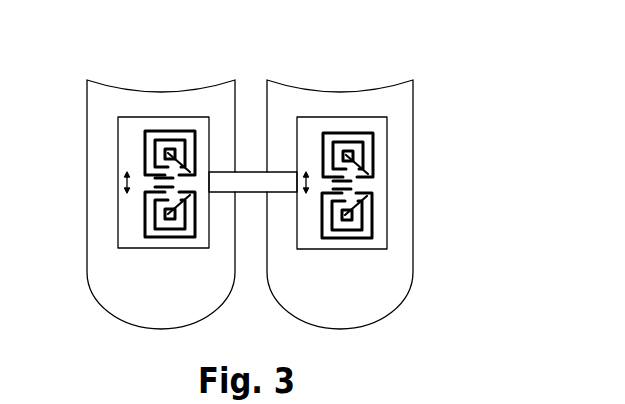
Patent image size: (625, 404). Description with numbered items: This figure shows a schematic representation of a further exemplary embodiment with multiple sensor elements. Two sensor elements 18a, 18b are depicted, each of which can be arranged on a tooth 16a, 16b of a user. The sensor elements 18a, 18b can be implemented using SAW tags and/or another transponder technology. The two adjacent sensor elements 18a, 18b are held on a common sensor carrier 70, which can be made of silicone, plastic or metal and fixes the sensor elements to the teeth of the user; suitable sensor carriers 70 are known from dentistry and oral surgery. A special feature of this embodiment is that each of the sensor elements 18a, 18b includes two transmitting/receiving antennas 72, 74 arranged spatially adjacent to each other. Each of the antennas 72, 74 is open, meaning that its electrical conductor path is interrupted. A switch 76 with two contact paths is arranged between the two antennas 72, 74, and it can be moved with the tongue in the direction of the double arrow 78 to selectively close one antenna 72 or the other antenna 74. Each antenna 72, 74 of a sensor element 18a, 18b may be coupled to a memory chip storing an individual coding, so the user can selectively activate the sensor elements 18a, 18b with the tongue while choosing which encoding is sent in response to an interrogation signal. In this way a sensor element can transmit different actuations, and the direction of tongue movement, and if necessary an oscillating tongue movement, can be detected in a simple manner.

The tooth 16a is at (87, 275).
The tooth 16b is at (413, 272).
The sensor element 18a is at (153, 117).
The sensor element 18b is at (385, 143).
The sensor carrier 70 is at (245, 172).
The transmitting/receiving antenna 72 is at (373, 150).
The transmitting/receiving antenna 74 is at (372, 228).
The switch 76 is at (352, 185).
The double arrow 78 is at (122, 182).